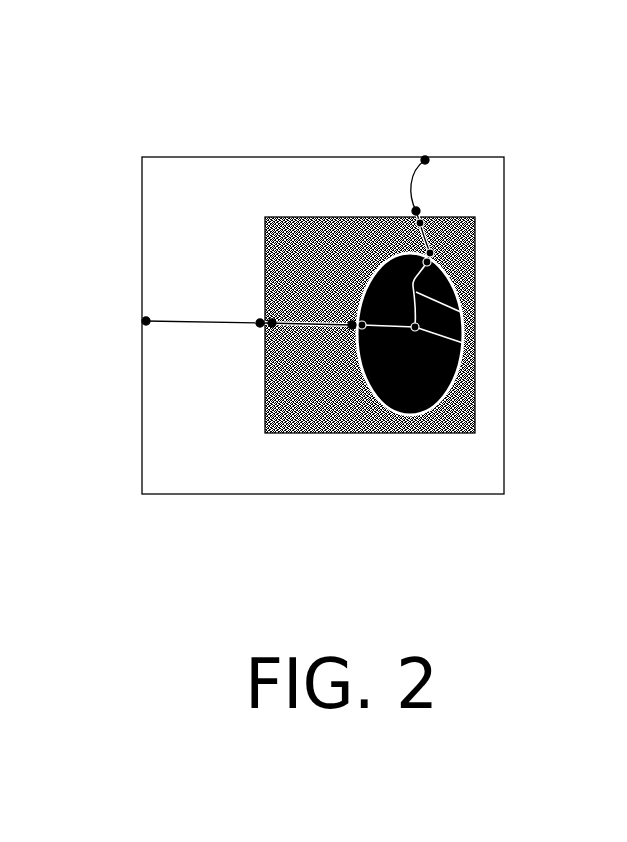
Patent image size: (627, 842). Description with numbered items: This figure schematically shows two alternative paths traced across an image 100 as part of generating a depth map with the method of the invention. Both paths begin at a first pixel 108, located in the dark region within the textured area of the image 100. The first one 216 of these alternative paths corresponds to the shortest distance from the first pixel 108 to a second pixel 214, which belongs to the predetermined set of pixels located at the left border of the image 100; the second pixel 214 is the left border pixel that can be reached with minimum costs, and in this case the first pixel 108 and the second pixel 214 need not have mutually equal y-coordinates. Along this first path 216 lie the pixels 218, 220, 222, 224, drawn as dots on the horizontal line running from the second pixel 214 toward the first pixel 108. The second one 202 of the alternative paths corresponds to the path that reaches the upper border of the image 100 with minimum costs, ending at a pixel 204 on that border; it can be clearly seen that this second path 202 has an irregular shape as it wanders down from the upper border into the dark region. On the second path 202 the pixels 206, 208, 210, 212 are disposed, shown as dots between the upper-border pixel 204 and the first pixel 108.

The image 100 is at (332, 157).
The first pixel 108 is at (463, 343).
The second one of alternative paths 202 is at (463, 313).
The pixel on upper border 204 is at (425, 160).
The pixel disposed on second alternative path 206 is at (416, 211).
The pixel disposed on second alternative path 208 is at (420, 223).
The pixel disposed on second alternative path 210 is at (430, 253).
The pixel disposed on second alternative path 212 is at (427, 262).
The second pixel 214 is at (145, 322).
The first one of alternative paths 216 is at (212, 317).
The pixel disposed on first alternative path 218 is at (260, 323).
The pixel disposed on first alternative path 220 is at (272, 323).
The pixel disposed on first alternative path 222 is at (352, 325).
The pixel disposed on first alternative path 224 is at (362, 325).